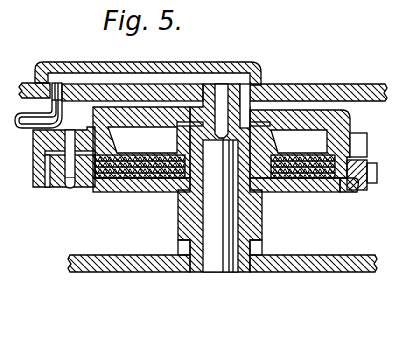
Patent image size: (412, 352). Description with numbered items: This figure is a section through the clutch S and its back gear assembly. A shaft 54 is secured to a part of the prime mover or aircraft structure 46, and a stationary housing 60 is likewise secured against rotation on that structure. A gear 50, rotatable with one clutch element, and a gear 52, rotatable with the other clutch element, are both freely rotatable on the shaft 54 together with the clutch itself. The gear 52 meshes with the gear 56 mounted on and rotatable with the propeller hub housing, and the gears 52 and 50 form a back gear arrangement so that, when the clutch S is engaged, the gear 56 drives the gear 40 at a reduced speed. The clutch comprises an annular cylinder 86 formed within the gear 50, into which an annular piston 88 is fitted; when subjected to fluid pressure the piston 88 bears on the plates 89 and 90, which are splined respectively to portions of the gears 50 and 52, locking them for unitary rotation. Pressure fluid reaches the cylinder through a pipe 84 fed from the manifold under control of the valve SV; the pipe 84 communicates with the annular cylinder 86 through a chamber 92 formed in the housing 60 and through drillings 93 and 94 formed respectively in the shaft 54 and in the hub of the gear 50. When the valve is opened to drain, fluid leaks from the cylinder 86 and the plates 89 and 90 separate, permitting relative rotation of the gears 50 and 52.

The stationary housing 60 is at (152, 67).
The prime mover or aircraft structure 46 is at (148, 63).
The chamber 92 is at (221, 66).
The drilling 93 is at (250, 101).
The annular cylinder 86 is at (306, 125).
The gear 50 is at (357, 136).
The pipe 84 is at (63, 113).
The drilling 94 is at (170, 128).
The annular piston 88 is at (284, 156).
The gear 40 is at (38, 183).
The gear 56 is at (57, 184).
The clutch S is at (152, 197).
The clutch plate 89 is at (268, 193).
The clutch plate 90 is at (339, 187).
The gear 52 is at (363, 185).
The shaft 54 is at (223, 264).